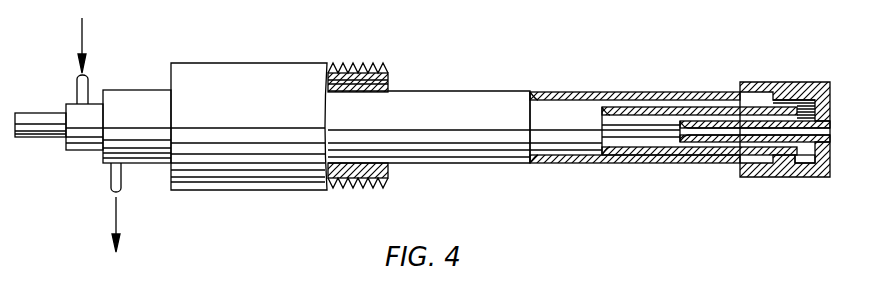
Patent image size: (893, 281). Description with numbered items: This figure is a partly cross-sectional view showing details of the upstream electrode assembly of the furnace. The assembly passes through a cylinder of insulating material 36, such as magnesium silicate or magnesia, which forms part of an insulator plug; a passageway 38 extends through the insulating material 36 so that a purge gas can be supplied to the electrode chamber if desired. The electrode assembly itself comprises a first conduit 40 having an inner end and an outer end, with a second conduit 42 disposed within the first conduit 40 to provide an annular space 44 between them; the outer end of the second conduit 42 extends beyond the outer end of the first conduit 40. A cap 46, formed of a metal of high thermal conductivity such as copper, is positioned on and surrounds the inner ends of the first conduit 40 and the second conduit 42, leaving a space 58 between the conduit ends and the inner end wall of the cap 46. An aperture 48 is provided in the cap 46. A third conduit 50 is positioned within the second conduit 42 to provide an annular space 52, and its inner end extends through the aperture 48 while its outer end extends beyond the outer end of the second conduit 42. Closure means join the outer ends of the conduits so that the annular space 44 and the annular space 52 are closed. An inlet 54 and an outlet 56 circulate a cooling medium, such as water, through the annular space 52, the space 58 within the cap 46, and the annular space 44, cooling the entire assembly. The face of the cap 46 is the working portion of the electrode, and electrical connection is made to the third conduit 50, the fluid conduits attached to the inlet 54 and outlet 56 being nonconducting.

The insulating material 36 is at (392, 180).
The passageway 38 is at (390, 72).
The first conduit 40 is at (464, 91).
The second conduit 42 is at (645, 107).
The annular space 44 is at (568, 92).
The cap 46 is at (822, 82).
The aperture 48 is at (827, 130).
The third conduit 50 is at (47, 112).
The annular space 52 is at (697, 142).
The inlet 54 is at (88, 79).
The outlet 56 is at (125, 183).
The space within cap 58 is at (812, 155).